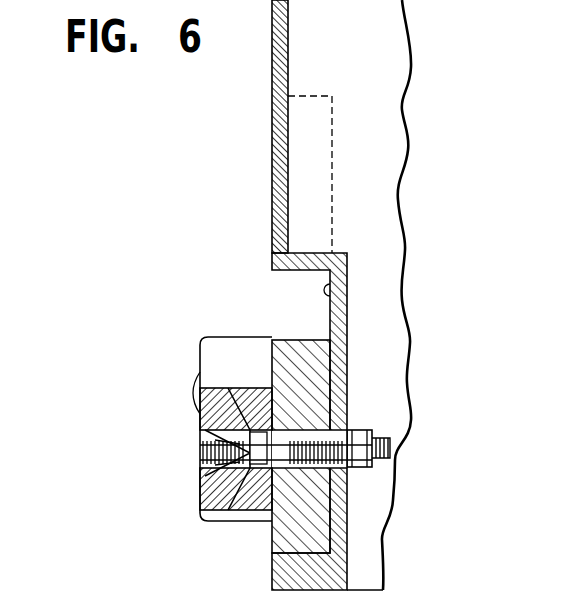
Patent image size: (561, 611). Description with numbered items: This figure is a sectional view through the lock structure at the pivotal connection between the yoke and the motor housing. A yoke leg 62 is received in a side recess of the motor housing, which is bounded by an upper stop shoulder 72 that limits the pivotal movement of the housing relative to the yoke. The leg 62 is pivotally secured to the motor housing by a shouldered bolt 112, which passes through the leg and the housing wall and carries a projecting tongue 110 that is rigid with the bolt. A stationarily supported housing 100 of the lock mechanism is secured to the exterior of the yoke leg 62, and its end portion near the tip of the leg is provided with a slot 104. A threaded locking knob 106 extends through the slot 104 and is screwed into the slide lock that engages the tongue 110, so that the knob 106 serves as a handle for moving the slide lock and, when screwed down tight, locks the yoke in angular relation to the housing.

The yoke leg 62 is at (320, 520).
The upper stop shoulder 72 is at (340, 289).
The stationarily supported housing 100 is at (208, 355).
The slot 104 is at (217, 505).
The threaded locking knob 106 is at (200, 486).
The projecting tongue 110 is at (264, 390).
The shouldered bolt 112 is at (347, 416).